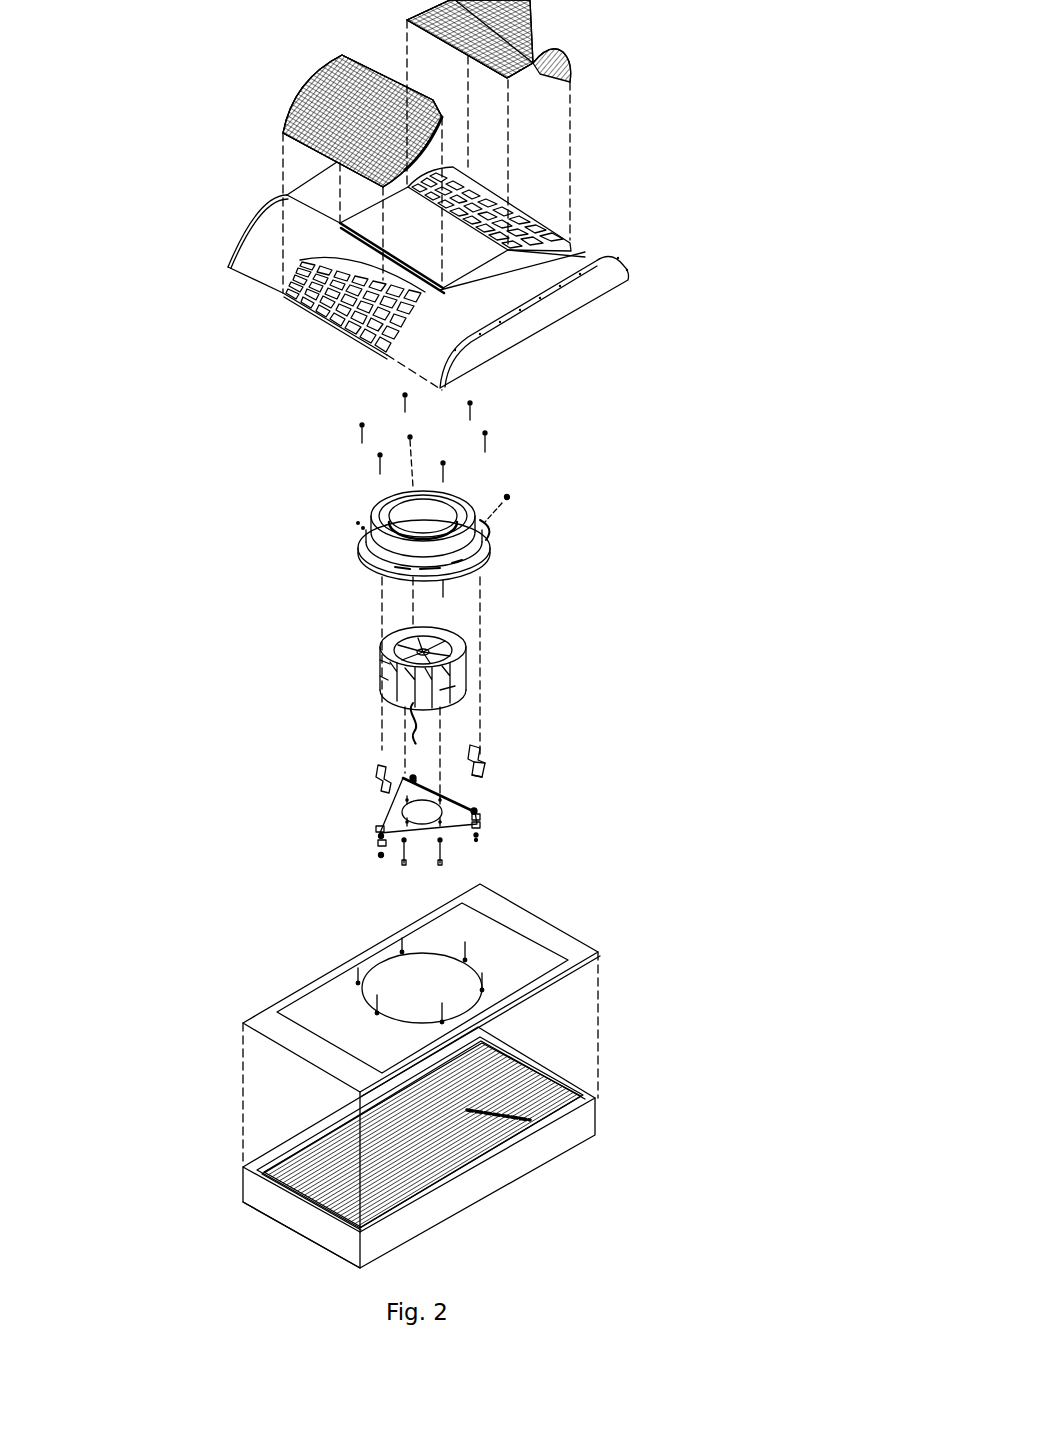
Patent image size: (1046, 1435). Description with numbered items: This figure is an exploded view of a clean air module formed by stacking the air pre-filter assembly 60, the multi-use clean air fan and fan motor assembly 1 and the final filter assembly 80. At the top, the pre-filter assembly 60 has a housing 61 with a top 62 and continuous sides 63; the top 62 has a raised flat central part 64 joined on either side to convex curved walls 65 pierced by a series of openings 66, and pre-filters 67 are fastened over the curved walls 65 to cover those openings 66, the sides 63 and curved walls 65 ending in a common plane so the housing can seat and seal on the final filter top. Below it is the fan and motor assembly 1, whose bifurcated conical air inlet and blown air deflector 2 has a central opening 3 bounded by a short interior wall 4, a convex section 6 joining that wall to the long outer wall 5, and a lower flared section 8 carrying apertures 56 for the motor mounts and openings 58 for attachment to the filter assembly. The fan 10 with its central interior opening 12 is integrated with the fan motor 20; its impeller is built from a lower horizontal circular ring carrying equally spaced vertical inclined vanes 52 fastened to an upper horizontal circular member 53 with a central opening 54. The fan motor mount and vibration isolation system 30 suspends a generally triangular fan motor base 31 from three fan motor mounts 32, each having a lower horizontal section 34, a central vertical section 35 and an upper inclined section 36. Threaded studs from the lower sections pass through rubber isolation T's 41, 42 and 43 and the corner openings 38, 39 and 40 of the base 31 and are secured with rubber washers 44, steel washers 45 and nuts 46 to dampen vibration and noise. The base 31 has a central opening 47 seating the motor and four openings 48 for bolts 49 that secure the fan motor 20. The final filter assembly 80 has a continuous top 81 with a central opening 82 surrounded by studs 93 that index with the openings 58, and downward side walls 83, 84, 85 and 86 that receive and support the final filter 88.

The multi-use clean air fan and fan motor assembly 1 is at (492, 635).
The bifurcated conical air inlet and blown air deflector 2 is at (465, 495).
The central opening 3 is at (422, 527).
The short interior wall 4 is at (393, 514).
The long outer wall 5 is at (382, 555).
The convex section 6 is at (387, 527).
The lower flared section 8 is at (405, 568).
The fan 10 is at (470, 665).
The central interior opening 12 is at (430, 652).
The fan motor 20 is at (387, 648).
The fan motor mount and vibration isolation system 30 is at (620, 812).
The generally triangular fan motor base 31 is at (393, 818).
The fan motor mounts 32 is at (384, 790).
The lower horizontal section 34 is at (482, 771).
The central vertical section 35 is at (482, 762).
The upper inclined section 36 is at (477, 748).
The opening 38 is at (478, 815).
The opening 39 is at (380, 837).
The opening 40 is at (414, 778).
The rubber isolation T 41 is at (475, 810).
The rubber isolation T 42 is at (378, 830).
The rubber isolation T 43 is at (413, 777).
The rubber washers 44 is at (478, 823).
The steel washers 45 is at (478, 835).
The nuts 46 is at (478, 838).
The opening 47 is at (418, 813).
The openings 48 is at (440, 820).
The bolts 49 is at (440, 865).
The vertical inclined vanes 52 is at (455, 686).
The upper horizontal circular member 53 is at (380, 655).
The opening 54 is at (433, 648).
The apertures 56 is at (488, 528).
The openings 58 is at (487, 562).
The air pre-filter assembly 60 is at (715, 152).
The housing 61 is at (285, 338).
The top 62 is at (340, 224).
The sides 63 is at (560, 304).
The raised flat central part 64 is at (420, 225).
The convex curved walls 65 is at (303, 253).
The openings 66 is at (303, 287).
The pre-filters 67 is at (527, 38).
The final filter assembly 80 is at (625, 1020).
The final filter assembly top 81 is at (520, 960).
The opening 82 is at (420, 986).
The side-wall 83 is at (512, 1162).
The side-wall 84 is at (305, 1225).
The side-wall 85 is at (290, 1142).
The side-wall 86 is at (577, 1080).
The final filter 88 is at (530, 1118).
The studs 93 is at (377, 1013).